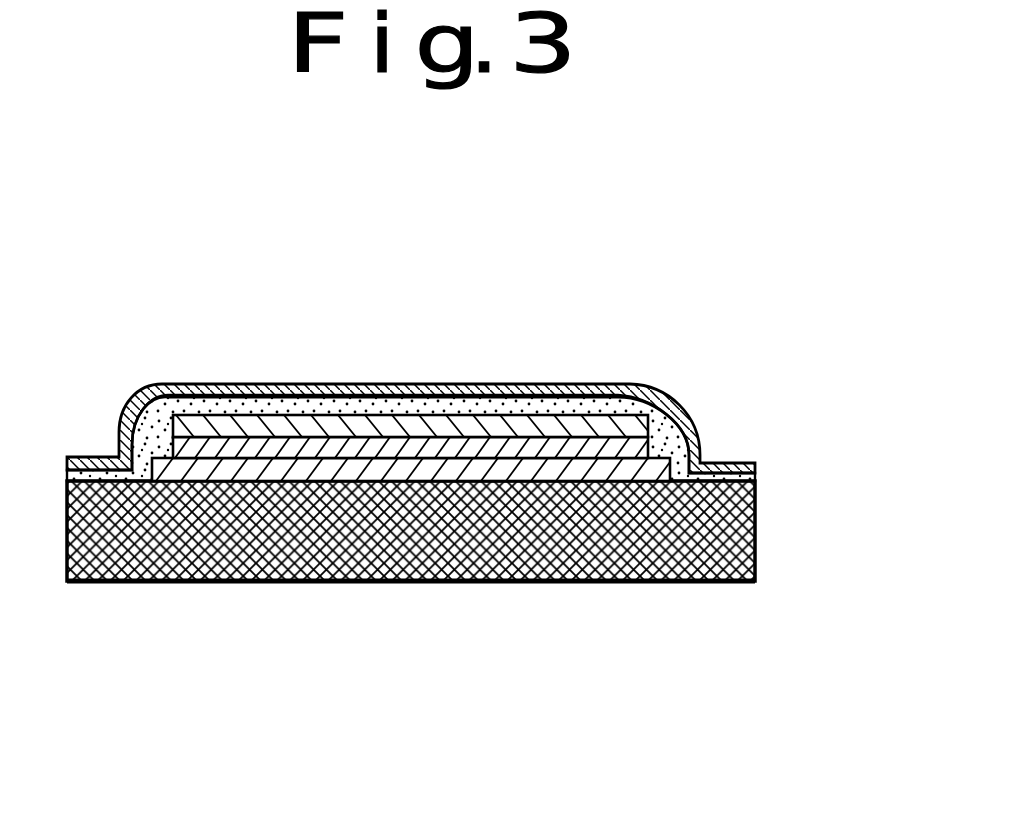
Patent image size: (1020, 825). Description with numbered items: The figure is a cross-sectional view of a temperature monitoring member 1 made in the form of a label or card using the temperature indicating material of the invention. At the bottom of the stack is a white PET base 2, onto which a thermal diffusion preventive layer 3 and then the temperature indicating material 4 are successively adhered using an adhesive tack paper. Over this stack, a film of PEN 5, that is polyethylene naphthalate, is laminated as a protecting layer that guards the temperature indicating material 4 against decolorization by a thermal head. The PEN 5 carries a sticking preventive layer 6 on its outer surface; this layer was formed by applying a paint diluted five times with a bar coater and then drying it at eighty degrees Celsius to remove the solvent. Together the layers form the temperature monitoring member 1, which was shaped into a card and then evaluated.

The temperature monitoring member 1 is at (580, 583).
The white PET base 2 is at (755, 530).
The thermal diffusion preventive layer 3 is at (265, 468).
The temperature indicating material 4 is at (578, 428).
The PEN 5 is at (470, 402).
The sticking preventive layer 6 is at (360, 388).